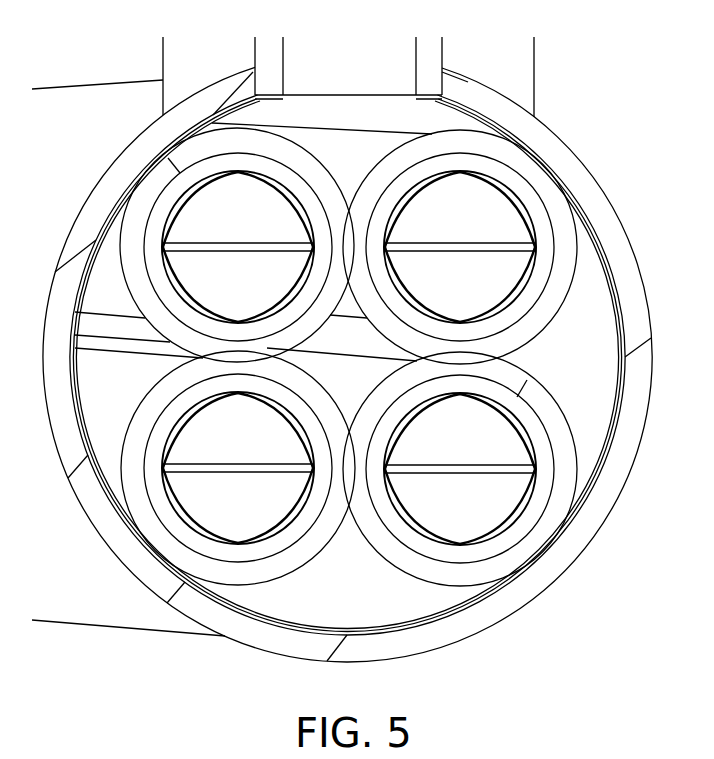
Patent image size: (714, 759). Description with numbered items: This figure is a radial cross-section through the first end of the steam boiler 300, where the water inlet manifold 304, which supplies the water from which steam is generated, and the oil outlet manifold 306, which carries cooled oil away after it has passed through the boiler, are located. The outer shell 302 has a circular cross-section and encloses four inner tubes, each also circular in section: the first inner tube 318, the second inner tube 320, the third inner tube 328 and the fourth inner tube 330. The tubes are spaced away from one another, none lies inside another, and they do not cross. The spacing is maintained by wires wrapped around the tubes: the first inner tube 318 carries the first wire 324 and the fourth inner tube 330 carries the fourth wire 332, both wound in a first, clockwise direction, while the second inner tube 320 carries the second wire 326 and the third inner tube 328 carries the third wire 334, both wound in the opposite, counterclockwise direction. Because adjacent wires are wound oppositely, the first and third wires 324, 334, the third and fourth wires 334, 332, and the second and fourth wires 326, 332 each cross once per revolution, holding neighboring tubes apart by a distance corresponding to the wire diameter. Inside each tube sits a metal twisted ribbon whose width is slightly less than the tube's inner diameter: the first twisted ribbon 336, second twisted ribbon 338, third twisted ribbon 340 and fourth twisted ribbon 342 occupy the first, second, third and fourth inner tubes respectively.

The steam boiler 300 is at (566, 56).
The outer shell 302 is at (555, 128).
The water inlet manifold 304 is at (364, 70).
The oil outlet manifold 306 is at (217, 65).
The first inner tube 318 is at (152, 222).
The second inner tube 320 is at (152, 494).
The first wire 324 is at (155, 183).
The second wire 326 is at (152, 533).
The third inner tube 328 is at (540, 218).
The fourth inner tube 330 is at (540, 497).
The fourth wire 332 is at (542, 537).
The third wire 334 is at (540, 178).
The first twisted ribbon 336 is at (255, 224).
The second twisted ribbon 338 is at (252, 455).
The third twisted ribbon 340 is at (478, 225).
The fourth twisted ribbon 342 is at (479, 450).